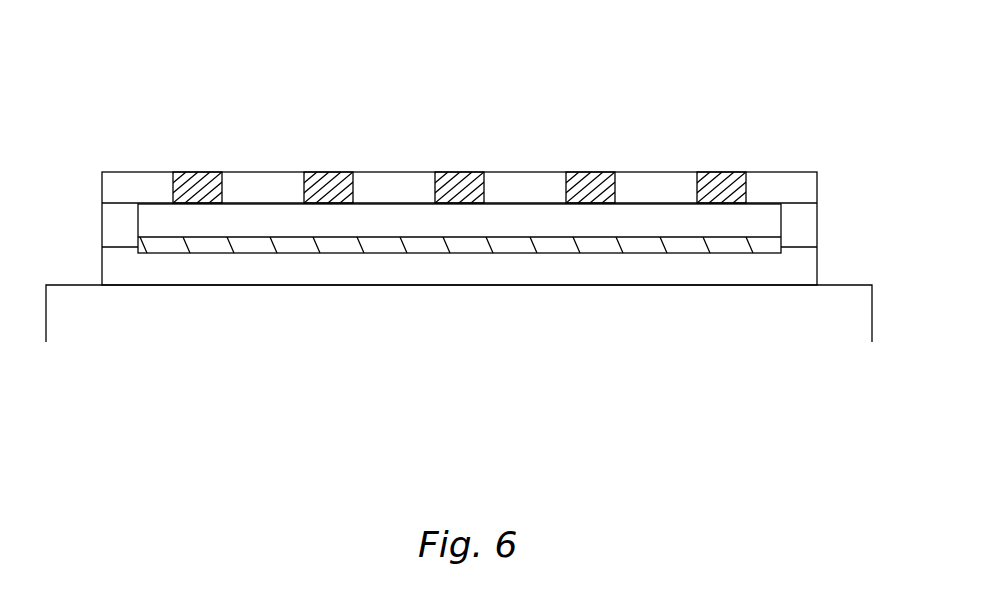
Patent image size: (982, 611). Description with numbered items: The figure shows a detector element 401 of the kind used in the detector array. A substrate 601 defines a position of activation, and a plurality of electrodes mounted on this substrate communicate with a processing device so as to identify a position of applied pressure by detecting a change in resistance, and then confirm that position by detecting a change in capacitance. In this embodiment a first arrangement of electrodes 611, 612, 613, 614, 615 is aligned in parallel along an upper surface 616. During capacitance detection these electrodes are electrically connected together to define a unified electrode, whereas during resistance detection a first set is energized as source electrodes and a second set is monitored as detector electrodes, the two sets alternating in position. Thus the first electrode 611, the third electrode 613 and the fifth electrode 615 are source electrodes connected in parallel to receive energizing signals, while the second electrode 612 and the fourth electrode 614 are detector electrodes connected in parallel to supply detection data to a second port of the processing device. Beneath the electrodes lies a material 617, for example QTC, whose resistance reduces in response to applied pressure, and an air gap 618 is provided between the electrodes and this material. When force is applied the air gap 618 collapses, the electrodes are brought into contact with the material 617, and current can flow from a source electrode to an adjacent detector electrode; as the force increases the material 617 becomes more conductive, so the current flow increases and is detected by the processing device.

The detector element 401 is at (766, 104).
The substrate 601 is at (815, 310).
The first electrode 611 is at (197, 185).
The second electrode 612 is at (328, 185).
The third electrode 613 is at (459, 185).
The fourth electrode 614 is at (590, 185).
The fifth electrode 615 is at (721, 185).
The upper surface 616 is at (787, 163).
The material 617 is at (770, 240).
The air gap 618 is at (152, 217).